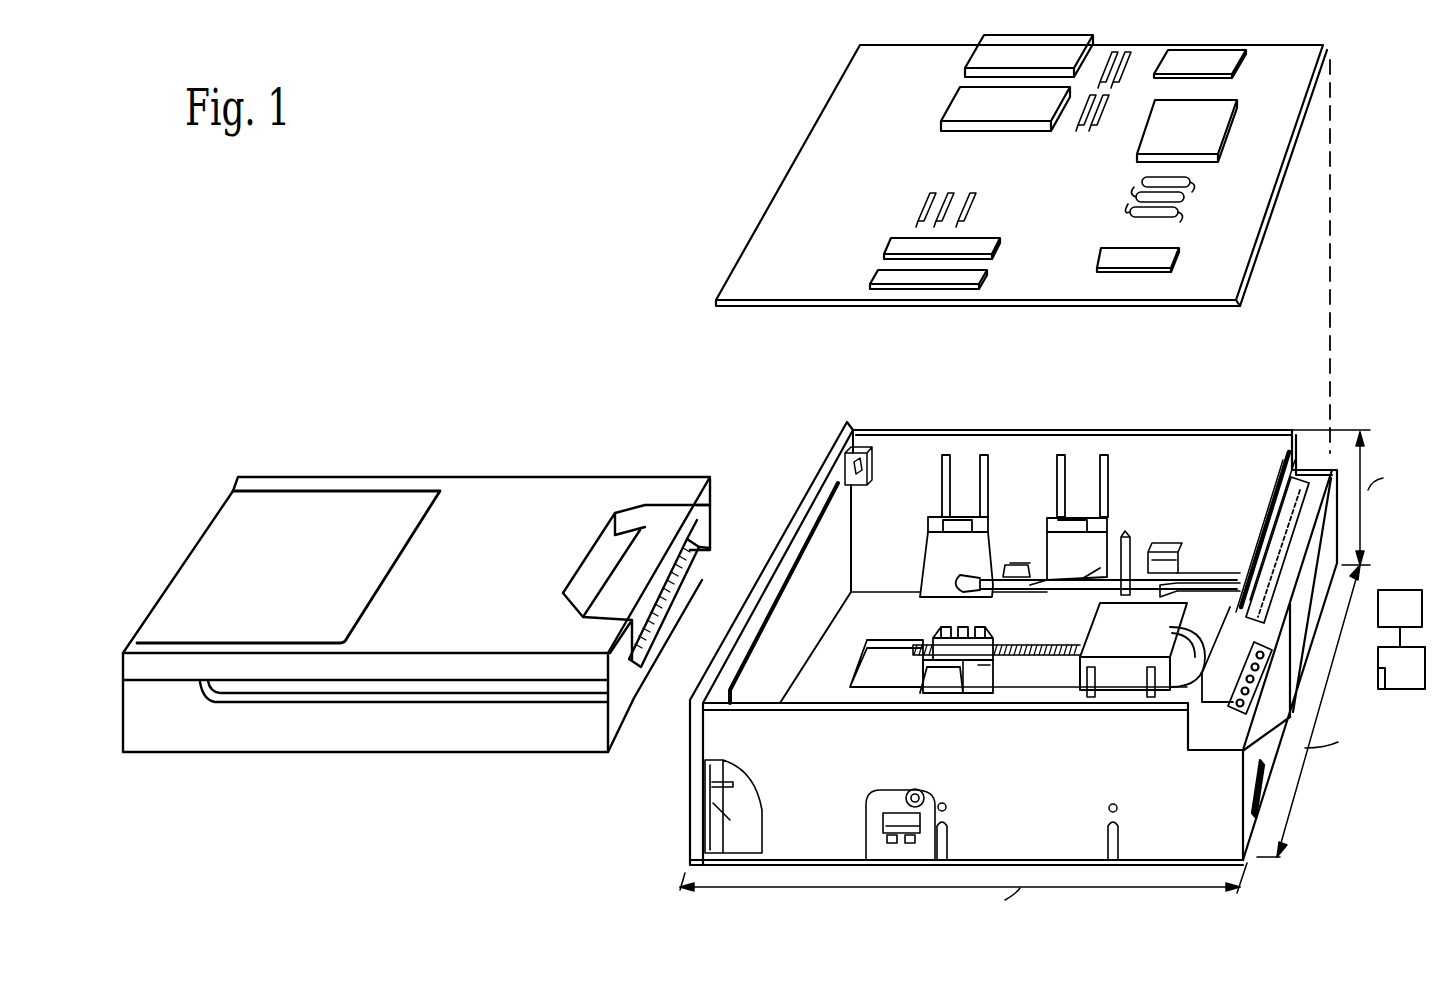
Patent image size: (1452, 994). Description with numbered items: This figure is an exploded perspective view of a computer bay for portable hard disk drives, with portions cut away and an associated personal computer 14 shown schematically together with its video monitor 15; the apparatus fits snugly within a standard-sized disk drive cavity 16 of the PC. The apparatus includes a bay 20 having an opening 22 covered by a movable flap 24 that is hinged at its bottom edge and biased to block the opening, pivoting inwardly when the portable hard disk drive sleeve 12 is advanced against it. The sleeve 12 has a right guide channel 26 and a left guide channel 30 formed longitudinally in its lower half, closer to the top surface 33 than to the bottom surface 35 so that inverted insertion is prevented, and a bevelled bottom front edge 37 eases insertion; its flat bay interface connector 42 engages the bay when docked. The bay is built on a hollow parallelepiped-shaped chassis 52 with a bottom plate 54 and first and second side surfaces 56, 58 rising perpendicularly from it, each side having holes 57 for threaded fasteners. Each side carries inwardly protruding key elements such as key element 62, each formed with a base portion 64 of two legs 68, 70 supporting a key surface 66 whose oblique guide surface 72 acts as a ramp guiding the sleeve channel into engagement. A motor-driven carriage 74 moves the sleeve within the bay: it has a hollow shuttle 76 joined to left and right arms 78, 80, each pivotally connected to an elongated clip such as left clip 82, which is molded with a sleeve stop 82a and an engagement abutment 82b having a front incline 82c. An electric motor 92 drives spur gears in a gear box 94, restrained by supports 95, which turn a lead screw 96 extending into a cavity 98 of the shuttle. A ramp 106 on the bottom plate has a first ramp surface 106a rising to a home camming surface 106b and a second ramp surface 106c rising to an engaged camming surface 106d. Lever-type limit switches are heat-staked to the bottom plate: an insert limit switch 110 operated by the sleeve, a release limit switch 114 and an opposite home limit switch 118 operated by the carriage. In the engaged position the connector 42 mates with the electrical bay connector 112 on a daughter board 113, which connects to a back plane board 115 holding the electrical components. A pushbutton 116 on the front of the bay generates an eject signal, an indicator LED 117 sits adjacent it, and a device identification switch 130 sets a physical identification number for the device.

The portable hard disk drive sleeve 12 is at (432, 617).
The personal computer 14 is at (1410, 688).
The video monitor 15 is at (1410, 588).
The disk drive cavity 16 is at (1383, 690).
The bay 20 is at (845, 697).
The opening 22 is at (966, 643).
The movable flap 24 is at (792, 592).
The right guide channel 26 is at (447, 690).
The left guide channel 30 is at (712, 520).
The top surface 33 is at (458, 492).
The bottom surface 35 is at (307, 754).
The bottom front edge 37 is at (612, 754).
The bay interface connector 42 is at (673, 605).
The chassis 52 is at (1017, 646).
The bottom plate 54 is at (968, 669).
The first side surface 56 is at (1205, 450).
The holes 57 is at (1122, 810).
The second side surface 58 is at (966, 781).
The key element 62 is at (1110, 513).
The base portion 64 is at (988, 512).
The key surface 66 is at (962, 520).
The leg 68 is at (987, 510).
The leg 70 is at (930, 510).
The guide surface 72 is at (926, 535).
The motor-driven carriage 74 is at (934, 674).
The shuttle 76 is at (988, 670).
The left arm 78 is at (983, 611).
The right arm 80 is at (937, 690).
The left clip 82 is at (1096, 599).
The sleeve stop 82a is at (1127, 537).
The engagement abutment 82b is at (1095, 584).
The front incline 82c is at (1097, 568).
The electric motor 92 is at (1205, 649).
The gear box 94 is at (1133, 671).
The supports 95 is at (1095, 698).
The lead screw 96 is at (1052, 680).
The cavity 98 is at (972, 672).
The ramp 106 is at (1240, 535).
The first ramp surface 106a is at (1110, 630).
The home camming surface 106b is at (1153, 624).
The second ramp surface 106c is at (1183, 572).
The engaged camming surface 106d is at (1213, 572).
The insert limit switch 110 is at (1163, 548).
The electrical bay connector 112 is at (1280, 460).
The daughter board 113 is at (1270, 480).
The release limit switch 114 is at (1017, 563).
The back plane board 115 is at (1258, 282).
The pushbutton 116 is at (690, 768).
The indicator LED 117 is at (681, 797).
The home limit switch 118 is at (865, 815).
The device identification switch 130 is at (1264, 800).